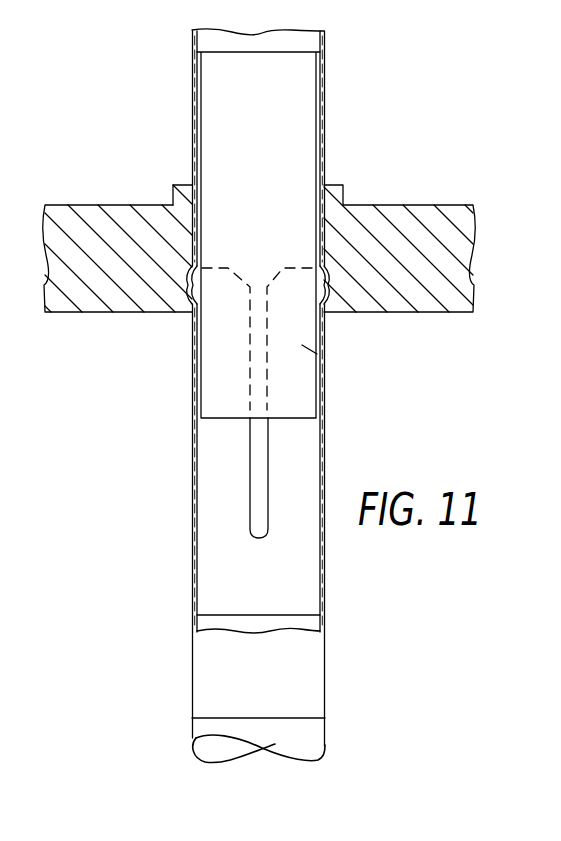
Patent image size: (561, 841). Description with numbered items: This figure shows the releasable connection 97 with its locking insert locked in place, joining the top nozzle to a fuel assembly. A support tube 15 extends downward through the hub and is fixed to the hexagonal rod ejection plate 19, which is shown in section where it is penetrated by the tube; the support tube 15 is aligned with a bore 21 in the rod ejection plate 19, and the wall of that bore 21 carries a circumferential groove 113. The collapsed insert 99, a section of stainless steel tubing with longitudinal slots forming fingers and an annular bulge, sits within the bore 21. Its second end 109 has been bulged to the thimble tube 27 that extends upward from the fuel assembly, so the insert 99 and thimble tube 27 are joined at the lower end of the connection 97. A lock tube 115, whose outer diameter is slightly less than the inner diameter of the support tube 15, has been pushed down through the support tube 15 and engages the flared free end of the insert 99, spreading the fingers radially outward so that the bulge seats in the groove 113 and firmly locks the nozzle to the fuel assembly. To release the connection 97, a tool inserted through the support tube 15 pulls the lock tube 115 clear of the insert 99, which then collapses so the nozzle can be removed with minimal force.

The support tube 15 is at (324, 133).
The rod ejection plate 19 is at (410, 205).
The bore 21 is at (202, 213).
The circumferential groove 113 is at (190, 292).
The lock tube 115 is at (324, 368).
The releasable connection 97 is at (177, 533).
The collapsed insert 99 is at (210, 654).
The second end 109 is at (310, 718).
The thimble tube 27 is at (200, 727).